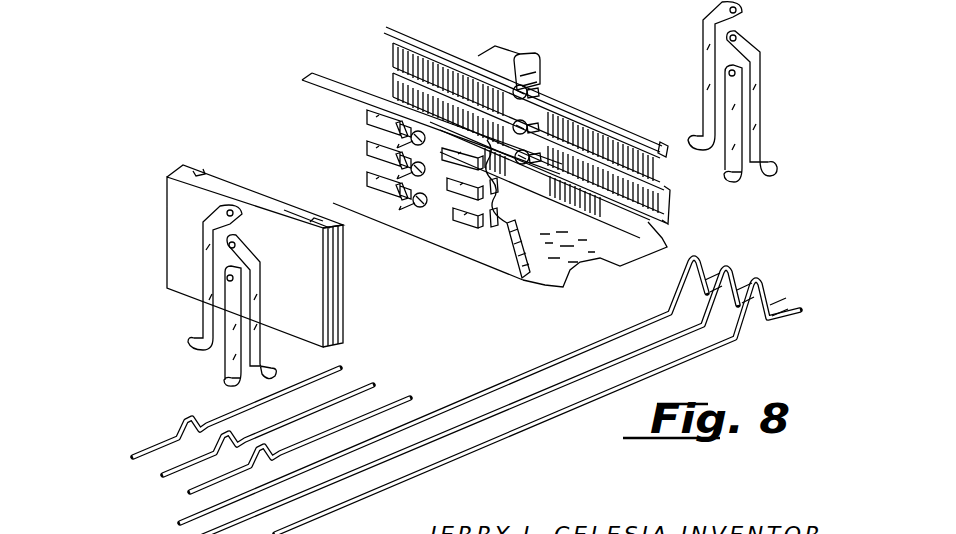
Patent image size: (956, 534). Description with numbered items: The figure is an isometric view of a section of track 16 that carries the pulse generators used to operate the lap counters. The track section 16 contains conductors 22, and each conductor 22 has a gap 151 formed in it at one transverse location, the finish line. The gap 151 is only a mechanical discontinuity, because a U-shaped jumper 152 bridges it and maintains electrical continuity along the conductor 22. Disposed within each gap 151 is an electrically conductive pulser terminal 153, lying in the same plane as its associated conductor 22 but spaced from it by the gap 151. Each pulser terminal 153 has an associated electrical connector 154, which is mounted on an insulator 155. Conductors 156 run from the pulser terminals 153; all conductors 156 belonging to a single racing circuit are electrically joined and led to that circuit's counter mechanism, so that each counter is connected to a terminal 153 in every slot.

The section of track 16 is at (383, 70).
The conductor 22 is at (604, 154).
The gap 151 is at (525, 53).
The U-shaped jumper 152 is at (362, 174).
The pulser terminal 153 is at (533, 158).
The electrical connector 154 is at (237, 337).
The insulator 155 is at (163, 205).
The conductor 156 is at (200, 477).